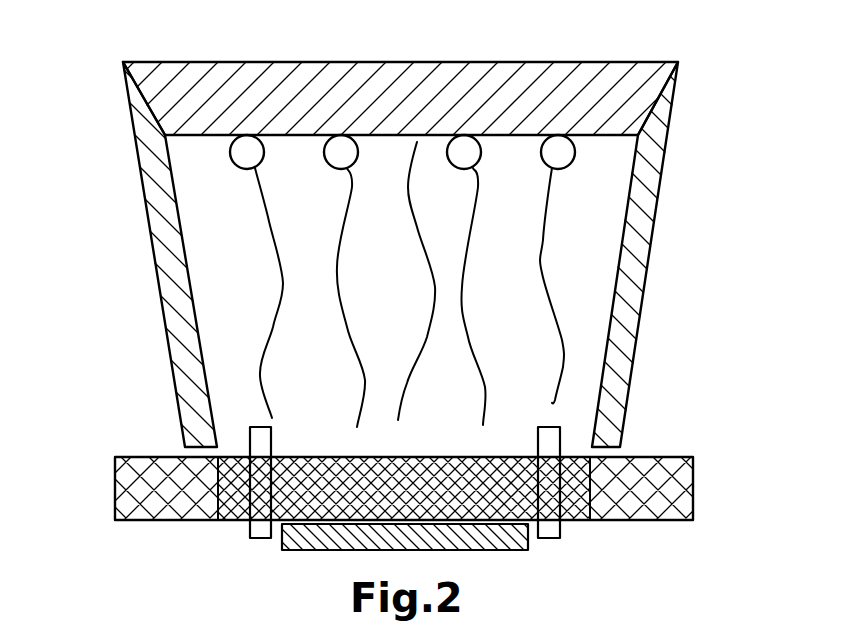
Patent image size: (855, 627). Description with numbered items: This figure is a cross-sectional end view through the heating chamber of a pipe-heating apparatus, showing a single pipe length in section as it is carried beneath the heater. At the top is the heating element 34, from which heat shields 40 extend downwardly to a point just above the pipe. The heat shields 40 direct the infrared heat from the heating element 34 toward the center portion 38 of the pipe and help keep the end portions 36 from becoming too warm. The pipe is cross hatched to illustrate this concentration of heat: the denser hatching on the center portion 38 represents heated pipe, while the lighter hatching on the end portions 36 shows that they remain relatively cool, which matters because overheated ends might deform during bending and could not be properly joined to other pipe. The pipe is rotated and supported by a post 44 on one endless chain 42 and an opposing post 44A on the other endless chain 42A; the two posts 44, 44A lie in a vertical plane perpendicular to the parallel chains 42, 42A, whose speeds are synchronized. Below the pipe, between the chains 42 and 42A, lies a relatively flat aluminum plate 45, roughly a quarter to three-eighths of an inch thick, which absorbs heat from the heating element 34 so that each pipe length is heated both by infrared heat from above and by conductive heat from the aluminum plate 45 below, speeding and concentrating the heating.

The heating element 34 is at (248, 148).
The end portions 36 is at (147, 482).
The center portion 38 is at (325, 490).
The heat shields 40 is at (178, 300).
The endless chain 42 is at (257, 535).
The endless chain 42A is at (552, 537).
The post 44 is at (253, 432).
The post 44A is at (552, 432).
The aluminum plate 45 is at (452, 537).